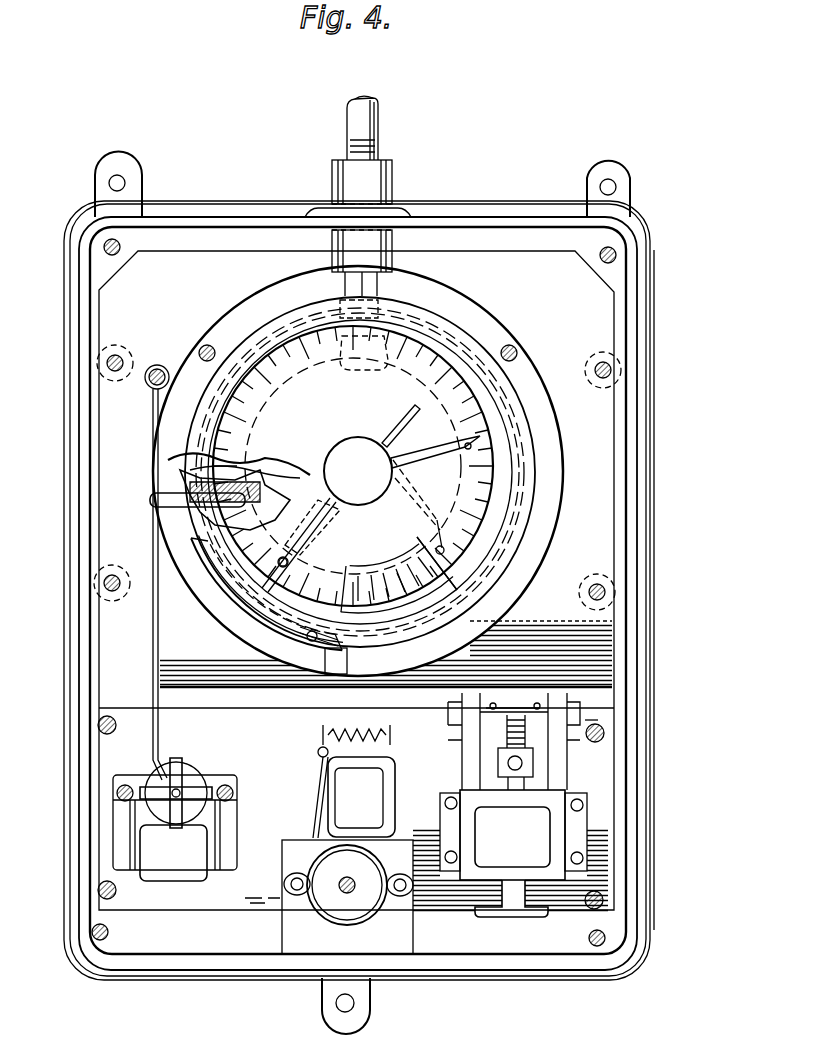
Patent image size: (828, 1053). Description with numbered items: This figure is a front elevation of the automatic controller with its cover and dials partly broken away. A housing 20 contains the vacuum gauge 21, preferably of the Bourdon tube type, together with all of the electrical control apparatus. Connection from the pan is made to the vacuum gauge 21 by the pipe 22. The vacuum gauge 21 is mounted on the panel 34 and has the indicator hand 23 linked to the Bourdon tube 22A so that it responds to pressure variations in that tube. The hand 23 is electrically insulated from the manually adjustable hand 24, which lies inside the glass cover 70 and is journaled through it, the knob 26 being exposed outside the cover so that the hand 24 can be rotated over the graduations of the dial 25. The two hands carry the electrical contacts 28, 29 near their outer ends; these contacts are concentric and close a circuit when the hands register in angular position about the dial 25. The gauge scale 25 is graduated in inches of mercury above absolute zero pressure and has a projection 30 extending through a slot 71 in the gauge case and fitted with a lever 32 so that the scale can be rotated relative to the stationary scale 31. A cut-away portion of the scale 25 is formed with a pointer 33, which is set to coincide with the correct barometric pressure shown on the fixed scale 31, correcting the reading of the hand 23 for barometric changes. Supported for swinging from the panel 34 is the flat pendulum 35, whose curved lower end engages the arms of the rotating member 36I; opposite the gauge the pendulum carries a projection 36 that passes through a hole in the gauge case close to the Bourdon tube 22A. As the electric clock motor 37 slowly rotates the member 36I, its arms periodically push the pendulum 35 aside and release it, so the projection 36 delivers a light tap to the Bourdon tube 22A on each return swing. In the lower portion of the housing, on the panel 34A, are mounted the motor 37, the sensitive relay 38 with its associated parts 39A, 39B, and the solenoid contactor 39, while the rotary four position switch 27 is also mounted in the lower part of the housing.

The housing 20 is at (652, 470).
The vacuum gauge 21 is at (232, 326).
The pipe 22 is at (377, 98).
The Bourdon tube 22A is at (275, 480).
The indicator hand 23 is at (308, 530).
The hand 24 is at (448, 442).
The gauge scale 25 is at (290, 460).
The knob 26 is at (358, 437).
The rotary four position switch 27 is at (375, 865).
The electrical contact 28 is at (466, 447).
The electrical contact 29 is at (300, 532).
The projection 30 is at (330, 643).
The stationary scale 31 is at (253, 513).
The lever 32 is at (340, 640).
The pointer 33 is at (380, 560).
The panel 34 is at (614, 289).
The panel 34A is at (565, 715).
The pendulum 35 is at (156, 632).
The projection 36 is at (180, 500).
The rotating member 36I is at (180, 760).
The electric clock motor 37 is at (210, 778).
The sensitive relay 38 is at (378, 782).
The solenoid contactor 39 is at (460, 808).
The adjusting screw 39A is at (500, 725).
The contacts 39B is at (540, 702).
The glass cover 70 is at (430, 400).
The slot 71 is at (352, 655).